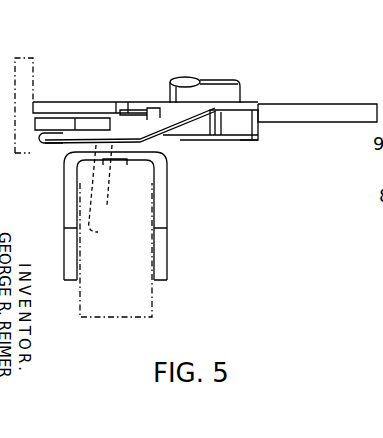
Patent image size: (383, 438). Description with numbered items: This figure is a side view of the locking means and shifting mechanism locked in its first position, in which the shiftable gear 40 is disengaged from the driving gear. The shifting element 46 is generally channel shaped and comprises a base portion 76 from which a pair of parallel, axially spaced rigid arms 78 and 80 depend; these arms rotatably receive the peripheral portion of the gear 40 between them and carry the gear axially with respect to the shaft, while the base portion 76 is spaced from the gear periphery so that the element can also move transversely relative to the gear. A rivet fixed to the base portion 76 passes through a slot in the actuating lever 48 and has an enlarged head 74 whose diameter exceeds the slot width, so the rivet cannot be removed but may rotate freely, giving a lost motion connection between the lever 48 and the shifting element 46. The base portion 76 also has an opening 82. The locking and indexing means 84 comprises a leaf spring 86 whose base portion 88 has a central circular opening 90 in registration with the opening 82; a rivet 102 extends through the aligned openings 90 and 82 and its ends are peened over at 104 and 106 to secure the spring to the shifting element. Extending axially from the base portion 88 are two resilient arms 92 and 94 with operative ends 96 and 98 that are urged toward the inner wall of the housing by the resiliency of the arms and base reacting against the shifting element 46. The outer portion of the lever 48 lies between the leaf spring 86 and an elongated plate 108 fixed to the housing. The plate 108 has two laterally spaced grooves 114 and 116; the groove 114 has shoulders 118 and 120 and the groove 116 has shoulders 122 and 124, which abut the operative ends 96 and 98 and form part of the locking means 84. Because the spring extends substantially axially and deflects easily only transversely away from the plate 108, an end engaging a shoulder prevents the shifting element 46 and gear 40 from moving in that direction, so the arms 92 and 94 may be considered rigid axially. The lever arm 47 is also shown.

The gear 40 is at (153, 296).
The shifting element 46 is at (168, 240).
The lever arm 47 is at (196, 159).
The actuating lever 48 is at (134, 115).
The enlarged head 74 is at (121, 110).
The base portion 76 is at (85, 168).
The arm 78 is at (162, 282).
The arm 80 is at (73, 281).
The opening 82 is at (110, 166).
The locking and indexing means 84 is at (170, 118).
The leaf spring 86 is at (168, 168).
The base portion 88 is at (100, 101).
The circular opening 90 is at (97, 92).
The resilient arm 92 is at (62, 146).
The resilient arm 94 is at (183, 140).
The operative end 96 is at (37, 140).
The operative end 98 is at (196, 146).
The rivet 102 is at (92, 230).
The peened-over end 104 is at (103, 97).
The peened-over end 106 is at (108, 178).
The elongated plate 108 is at (318, 113).
The groove 114 is at (185, 105).
The groove 116 is at (256, 140).
The shoulder 118 is at (146, 112).
The shoulder 120 is at (197, 81).
The shoulder 122 is at (216, 125).
The shoulder 124 is at (258, 113).